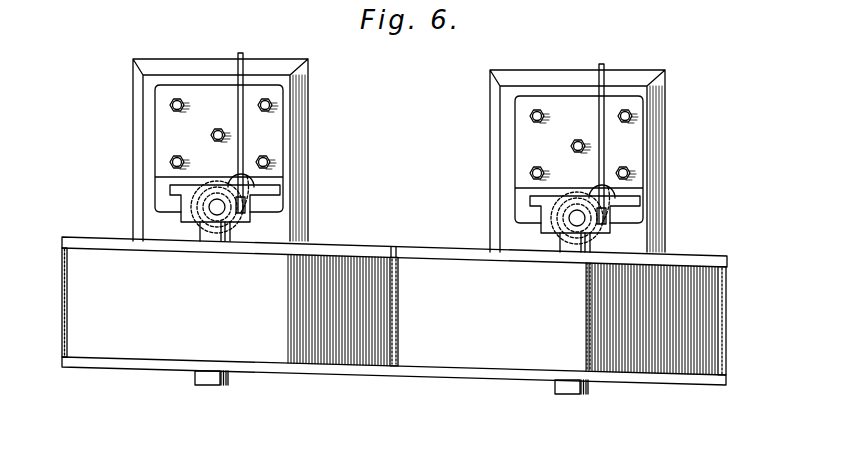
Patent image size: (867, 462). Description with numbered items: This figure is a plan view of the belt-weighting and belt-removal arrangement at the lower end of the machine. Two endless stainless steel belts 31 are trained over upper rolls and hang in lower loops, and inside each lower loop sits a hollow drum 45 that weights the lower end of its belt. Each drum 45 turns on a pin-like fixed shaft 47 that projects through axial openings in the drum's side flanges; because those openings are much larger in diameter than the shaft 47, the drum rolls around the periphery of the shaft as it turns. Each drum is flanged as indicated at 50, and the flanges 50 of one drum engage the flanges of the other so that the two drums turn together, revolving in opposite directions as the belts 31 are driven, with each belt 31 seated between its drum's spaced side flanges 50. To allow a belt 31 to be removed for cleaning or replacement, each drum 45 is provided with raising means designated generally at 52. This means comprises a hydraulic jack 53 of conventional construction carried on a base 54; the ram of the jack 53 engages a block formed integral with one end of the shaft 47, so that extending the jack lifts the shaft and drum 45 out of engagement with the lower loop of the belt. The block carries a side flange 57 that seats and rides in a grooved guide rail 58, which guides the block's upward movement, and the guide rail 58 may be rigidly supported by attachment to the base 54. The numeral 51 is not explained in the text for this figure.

The endless stainless steel belt 31 is at (63, 284).
The drum 45 is at (130, 342).
The fixed shaft 47 is at (217, 386).
The flange 50 is at (407, 250).
The beam 51 is at (489, 378).
The drum raising means 52 is at (272, 158).
The hydraulic jack 53 is at (232, 228).
The base 54 is at (278, 70).
The side flange 57 is at (280, 195).
The grooved guide rail 58 is at (267, 186).